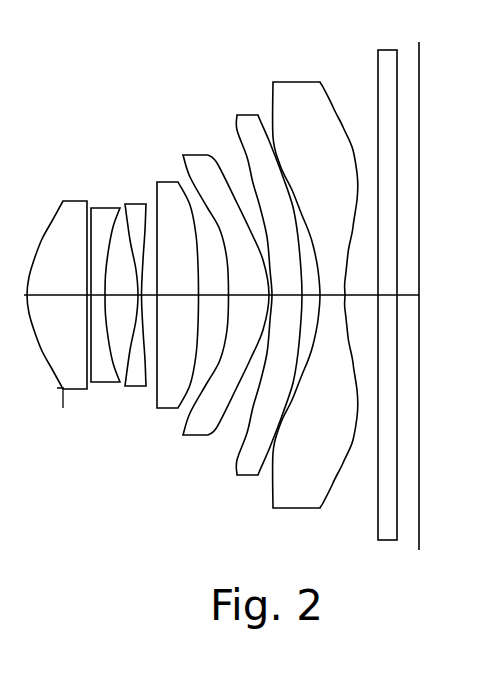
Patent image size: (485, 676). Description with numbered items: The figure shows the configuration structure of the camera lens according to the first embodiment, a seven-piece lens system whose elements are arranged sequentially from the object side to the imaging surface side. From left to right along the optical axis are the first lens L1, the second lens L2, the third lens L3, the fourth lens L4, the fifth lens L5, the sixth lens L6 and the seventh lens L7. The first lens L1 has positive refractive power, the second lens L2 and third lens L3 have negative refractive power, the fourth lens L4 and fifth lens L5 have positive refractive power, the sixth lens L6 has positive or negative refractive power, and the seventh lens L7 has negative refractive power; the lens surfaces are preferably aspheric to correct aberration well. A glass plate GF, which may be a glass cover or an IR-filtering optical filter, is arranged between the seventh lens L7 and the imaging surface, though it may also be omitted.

The first lens L1 is at (62, 202).
The second lens L2 is at (100, 277).
The third lens L3 is at (132, 279).
The fourth lens L4 is at (172, 275).
The fifth lens L5 is at (225, 275).
The sixth lens L6 is at (266, 275).
The seventh lens L7 is at (315, 280).
The glass plate GF is at (388, 275).